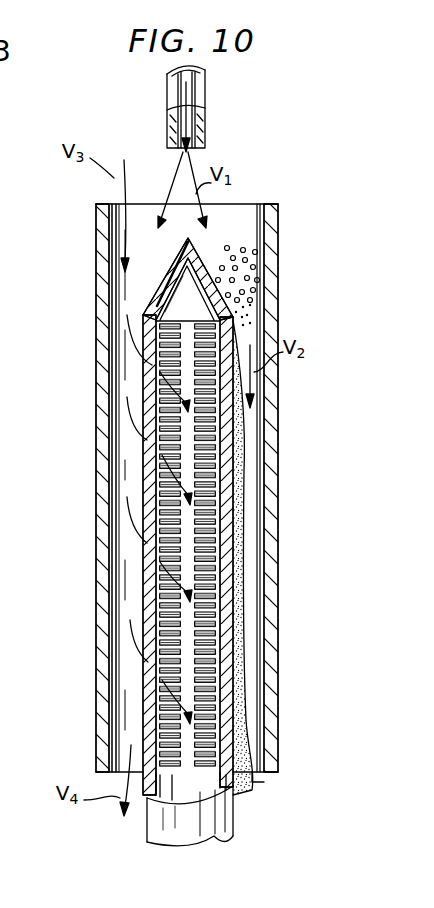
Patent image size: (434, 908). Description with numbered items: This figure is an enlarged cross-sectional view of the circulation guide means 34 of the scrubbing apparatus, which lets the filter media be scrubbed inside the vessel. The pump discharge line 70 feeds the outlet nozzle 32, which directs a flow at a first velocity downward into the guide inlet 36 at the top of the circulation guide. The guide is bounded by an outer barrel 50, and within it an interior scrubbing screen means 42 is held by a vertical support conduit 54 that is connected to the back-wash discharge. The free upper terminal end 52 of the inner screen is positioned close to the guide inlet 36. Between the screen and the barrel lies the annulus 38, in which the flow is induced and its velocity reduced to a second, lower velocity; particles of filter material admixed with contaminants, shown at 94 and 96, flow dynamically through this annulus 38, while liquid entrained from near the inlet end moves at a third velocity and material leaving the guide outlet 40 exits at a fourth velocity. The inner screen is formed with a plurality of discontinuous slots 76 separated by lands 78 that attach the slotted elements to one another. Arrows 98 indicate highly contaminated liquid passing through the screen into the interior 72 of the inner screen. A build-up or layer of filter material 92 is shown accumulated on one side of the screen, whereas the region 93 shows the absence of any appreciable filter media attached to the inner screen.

The outlet nozzle 32 is at (178, 147).
The circulation guide means 34 is at (84, 478).
The guide inlet 36 is at (149, 456).
The annulus 38 is at (258, 523).
The guide outlet 40 is at (255, 782).
The interior scrubbing screen means 42 is at (143, 562).
The outer barrel 50 is at (108, 513).
The free upper terminal end 52 is at (178, 268).
The vertical support conduit 54 is at (235, 818).
The pump discharge line 70 is at (205, 90).
The interior of the inner scrubbing screen means 72 is at (218, 450).
The slots 76 is at (187, 546).
The lands 78 is at (183, 555).
The build-up or layer of filter material 92 is at (250, 716).
The absence of filter media on the inner screen 93 is at (140, 698).
The dynamic flow of particles of filter material 94 is at (248, 237).
The dynamic flow of particles of filter material 96 is at (252, 313).
The arrows indicating highly contaminated liquid flow 98 is at (125, 397).